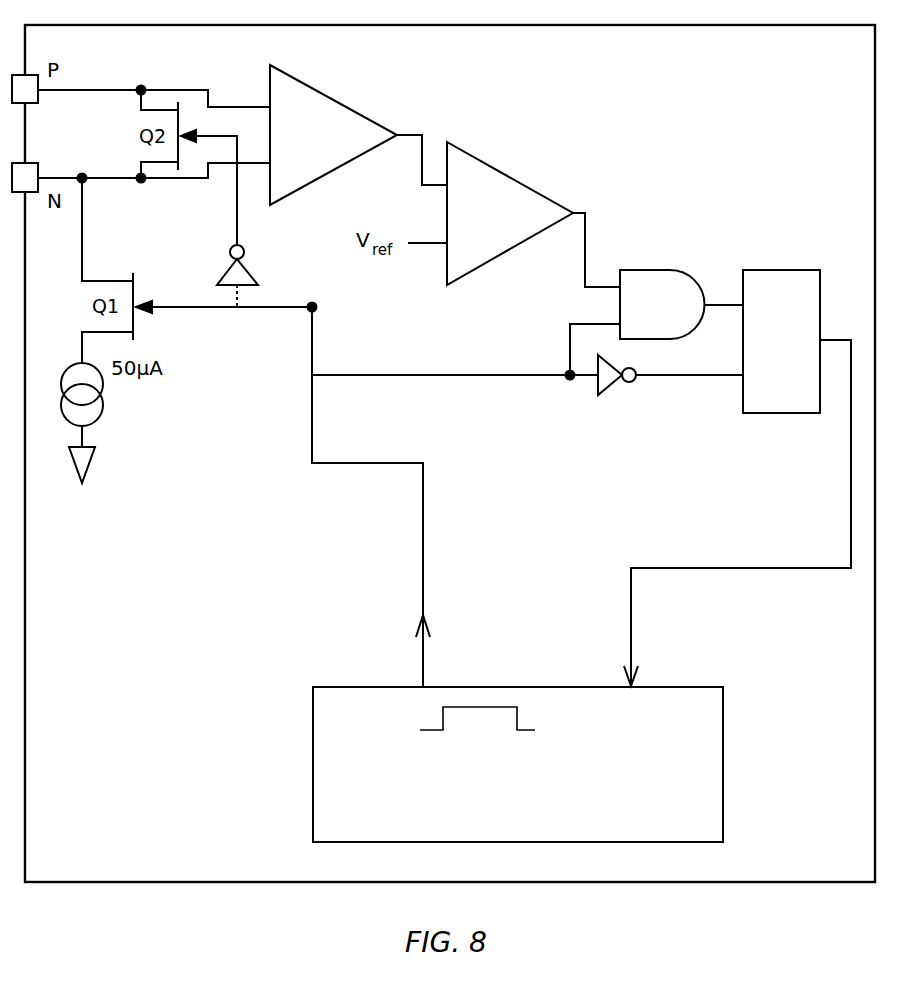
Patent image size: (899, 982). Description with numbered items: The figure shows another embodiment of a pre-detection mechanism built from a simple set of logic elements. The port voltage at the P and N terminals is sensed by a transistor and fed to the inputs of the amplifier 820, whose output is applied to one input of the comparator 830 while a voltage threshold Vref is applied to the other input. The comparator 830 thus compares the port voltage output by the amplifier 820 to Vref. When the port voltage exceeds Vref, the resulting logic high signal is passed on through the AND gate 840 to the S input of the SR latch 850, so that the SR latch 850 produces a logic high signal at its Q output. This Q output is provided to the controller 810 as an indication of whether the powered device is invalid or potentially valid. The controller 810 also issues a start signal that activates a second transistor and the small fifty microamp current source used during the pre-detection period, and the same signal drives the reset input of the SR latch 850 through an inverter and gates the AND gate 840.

The controller 810 is at (723, 765).
The amplifier 820 is at (343, 103).
The comparator 830 is at (507, 173).
The AND gate 840 is at (655, 270).
The SR latch 850 is at (780, 270).